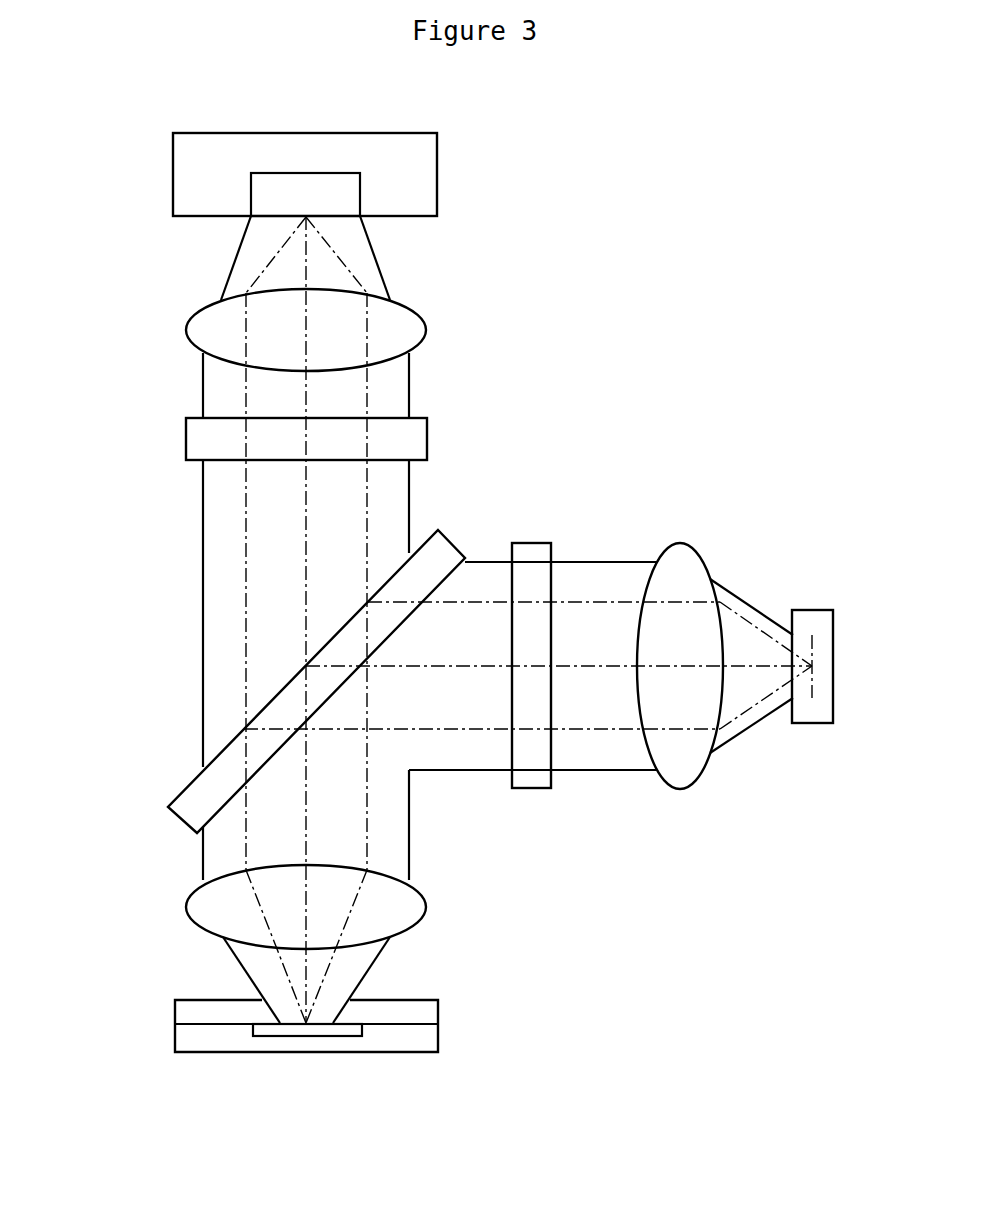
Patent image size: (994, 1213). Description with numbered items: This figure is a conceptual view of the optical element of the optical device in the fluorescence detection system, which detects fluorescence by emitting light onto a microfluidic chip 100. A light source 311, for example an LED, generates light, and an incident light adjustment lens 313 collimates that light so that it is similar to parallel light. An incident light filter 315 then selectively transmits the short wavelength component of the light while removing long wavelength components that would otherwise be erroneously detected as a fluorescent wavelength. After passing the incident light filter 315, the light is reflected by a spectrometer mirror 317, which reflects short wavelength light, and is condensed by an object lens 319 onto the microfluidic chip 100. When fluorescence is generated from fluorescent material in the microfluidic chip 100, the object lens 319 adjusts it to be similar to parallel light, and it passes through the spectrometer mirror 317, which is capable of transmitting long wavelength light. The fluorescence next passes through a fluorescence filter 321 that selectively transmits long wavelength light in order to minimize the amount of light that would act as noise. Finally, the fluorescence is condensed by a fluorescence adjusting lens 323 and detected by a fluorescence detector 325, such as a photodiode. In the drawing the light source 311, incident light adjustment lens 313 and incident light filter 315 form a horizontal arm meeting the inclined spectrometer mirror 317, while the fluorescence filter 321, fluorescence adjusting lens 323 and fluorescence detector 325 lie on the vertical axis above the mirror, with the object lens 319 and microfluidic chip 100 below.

The fluorescence detector 325 is at (438, 172).
The fluorescence adjusting lens 323 is at (427, 330).
The fluorescence filter 321 is at (186, 437).
The spectrometer mirror 317 is at (190, 803).
The incident light filter 315 is at (540, 790).
The incident light adjustment lens 313 is at (695, 792).
The light source 311 is at (815, 610).
The object lens 319 is at (187, 910).
The microfluidic chip 100 is at (438, 1013).